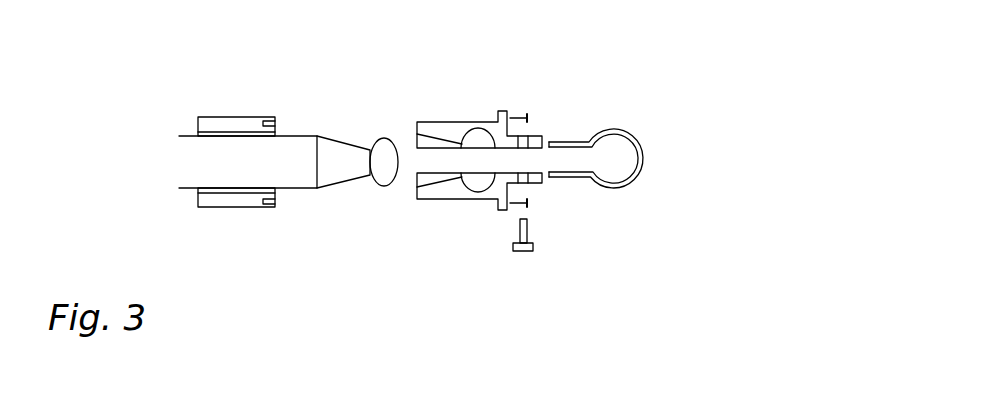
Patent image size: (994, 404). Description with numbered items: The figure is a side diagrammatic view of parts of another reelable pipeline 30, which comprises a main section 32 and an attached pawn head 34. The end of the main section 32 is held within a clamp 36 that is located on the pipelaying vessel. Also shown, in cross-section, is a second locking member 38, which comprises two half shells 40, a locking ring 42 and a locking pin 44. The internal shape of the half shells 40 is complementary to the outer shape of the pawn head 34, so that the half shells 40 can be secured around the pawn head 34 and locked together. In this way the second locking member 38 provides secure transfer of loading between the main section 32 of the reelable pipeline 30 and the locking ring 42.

The reelable pipeline 30 is at (304, 92).
The main section 32 is at (293, 189).
The pawn head 34 is at (343, 176).
The clamp 36 is at (218, 208).
The second locking member 38 is at (537, 68).
The half shells 40 is at (443, 121).
The locking ring 42 is at (645, 155).
The locking pin 44 is at (528, 232).